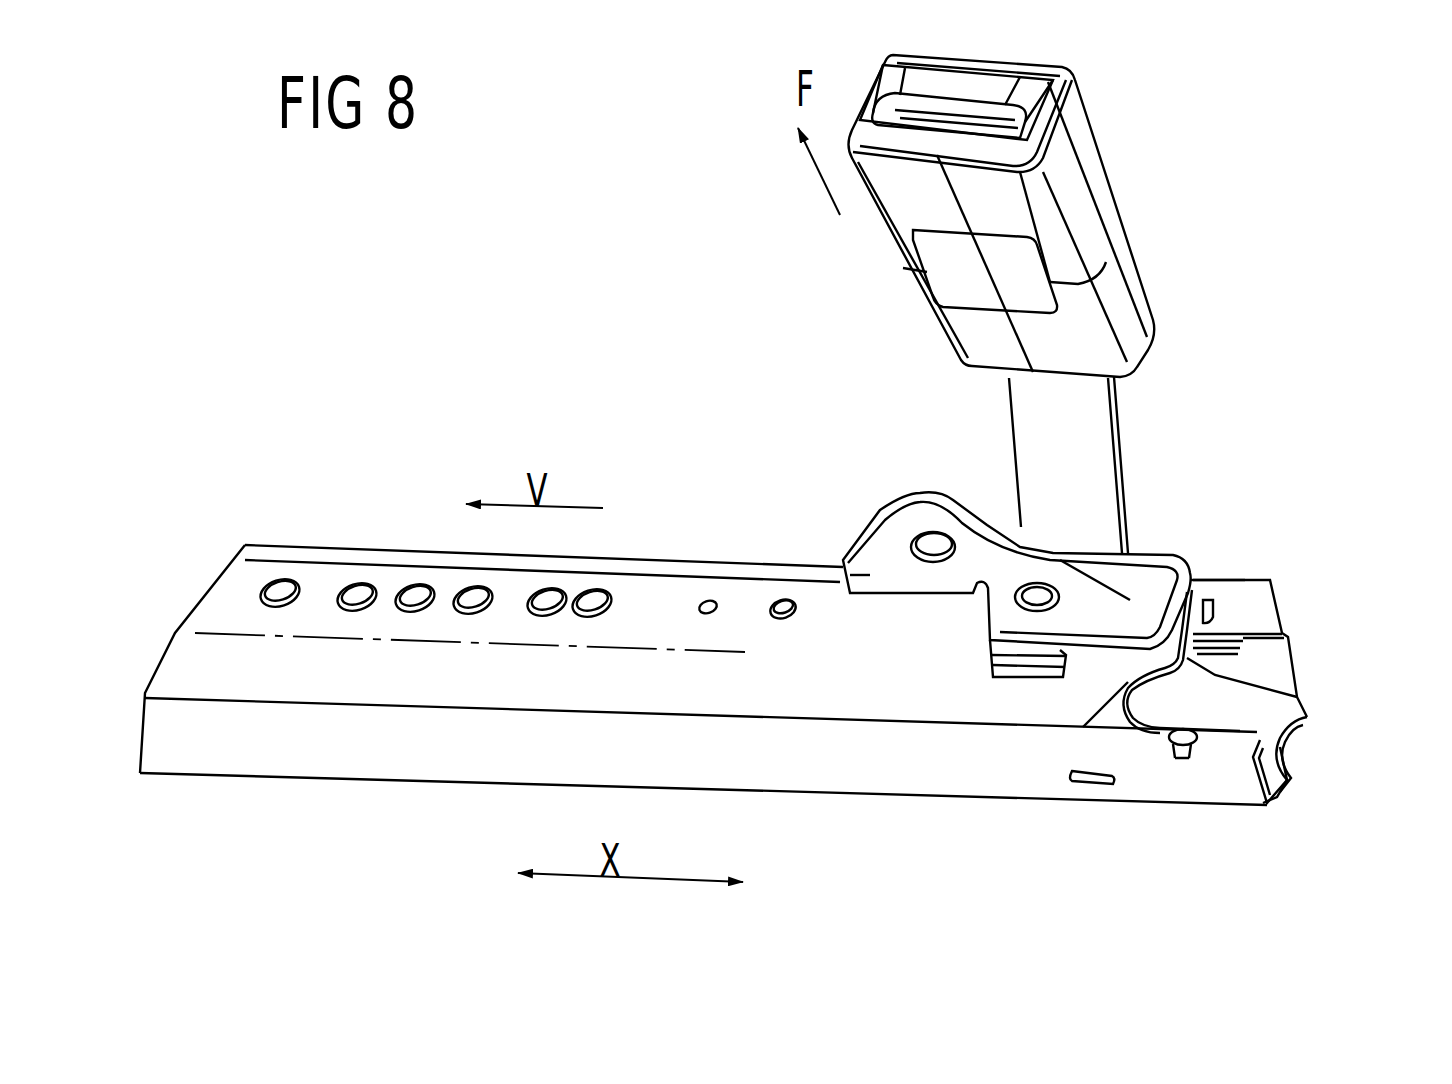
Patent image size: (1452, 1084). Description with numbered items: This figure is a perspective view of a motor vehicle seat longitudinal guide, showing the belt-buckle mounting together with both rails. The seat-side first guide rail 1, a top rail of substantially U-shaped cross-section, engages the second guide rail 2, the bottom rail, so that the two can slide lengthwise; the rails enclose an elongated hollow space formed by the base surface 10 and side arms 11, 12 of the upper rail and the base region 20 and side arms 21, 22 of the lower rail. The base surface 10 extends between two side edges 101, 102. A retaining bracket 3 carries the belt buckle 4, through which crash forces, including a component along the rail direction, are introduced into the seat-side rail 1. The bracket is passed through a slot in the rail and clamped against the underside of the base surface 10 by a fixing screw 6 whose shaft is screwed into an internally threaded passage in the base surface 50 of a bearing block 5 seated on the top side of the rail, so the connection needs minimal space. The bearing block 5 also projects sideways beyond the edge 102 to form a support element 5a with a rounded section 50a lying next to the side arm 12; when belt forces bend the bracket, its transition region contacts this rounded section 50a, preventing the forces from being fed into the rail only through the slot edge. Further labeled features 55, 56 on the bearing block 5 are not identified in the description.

The first guide rail 1 is at (243, 628).
The second guide rail 2 is at (1197, 807).
The retaining bracket 3 is at (1130, 445).
The belt buckle 4 is at (1125, 163).
The bearing block 5 is at (925, 480).
The support element 5a is at (1124, 600).
The fixing screw 6 is at (1030, 608).
The base surface 10 is at (1293, 692).
The side arm 11 is at (1156, 728).
The side arm 12 is at (1217, 610).
The base region 20 is at (1290, 773).
The side arm 21 is at (1267, 803).
The side arm 22 is at (1293, 650).
The base surface 50 is at (1197, 577).
The rounded section 50a is at (1213, 577).
The bracket base portion 55 is at (872, 555).
The bracket hole 56 is at (928, 540).
The side edge 101 is at (1090, 718).
The side edge 102 is at (1233, 577).